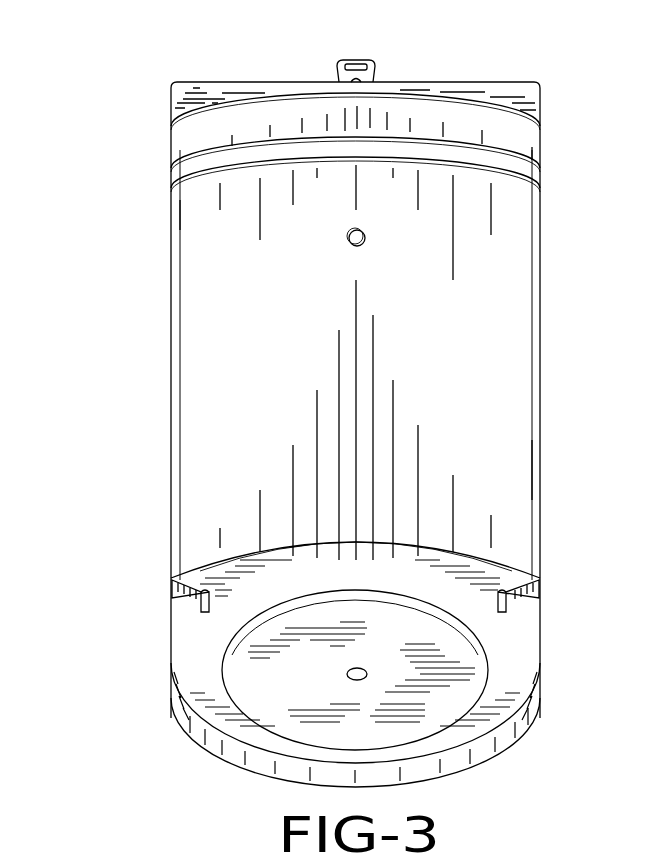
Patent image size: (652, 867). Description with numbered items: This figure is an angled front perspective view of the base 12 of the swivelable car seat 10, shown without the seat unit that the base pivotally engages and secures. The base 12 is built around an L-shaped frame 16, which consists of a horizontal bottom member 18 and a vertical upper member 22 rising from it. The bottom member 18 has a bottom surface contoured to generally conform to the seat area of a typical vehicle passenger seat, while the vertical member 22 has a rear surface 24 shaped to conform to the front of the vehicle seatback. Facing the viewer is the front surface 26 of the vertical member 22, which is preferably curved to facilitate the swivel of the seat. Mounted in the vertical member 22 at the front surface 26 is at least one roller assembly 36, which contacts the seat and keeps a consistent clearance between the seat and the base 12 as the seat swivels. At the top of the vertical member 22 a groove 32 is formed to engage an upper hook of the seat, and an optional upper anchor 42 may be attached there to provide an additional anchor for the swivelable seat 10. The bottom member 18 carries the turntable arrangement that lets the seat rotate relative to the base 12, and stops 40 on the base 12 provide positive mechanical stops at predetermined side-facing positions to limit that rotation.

The swivelable car seat 10 is at (106, 122).
The base 12 is at (170, 366).
The L-shaped frame 16 is at (541, 470).
The horizontal bottom member 18 is at (507, 742).
The vertical upper member 22 is at (170, 276).
The rear surface 24 is at (241, 82).
The front surface 26 is at (474, 362).
The groove 32 is at (500, 143).
The roller assembly 36 is at (352, 243).
The stops 40 is at (205, 597).
The upper anchor 42 is at (352, 60).